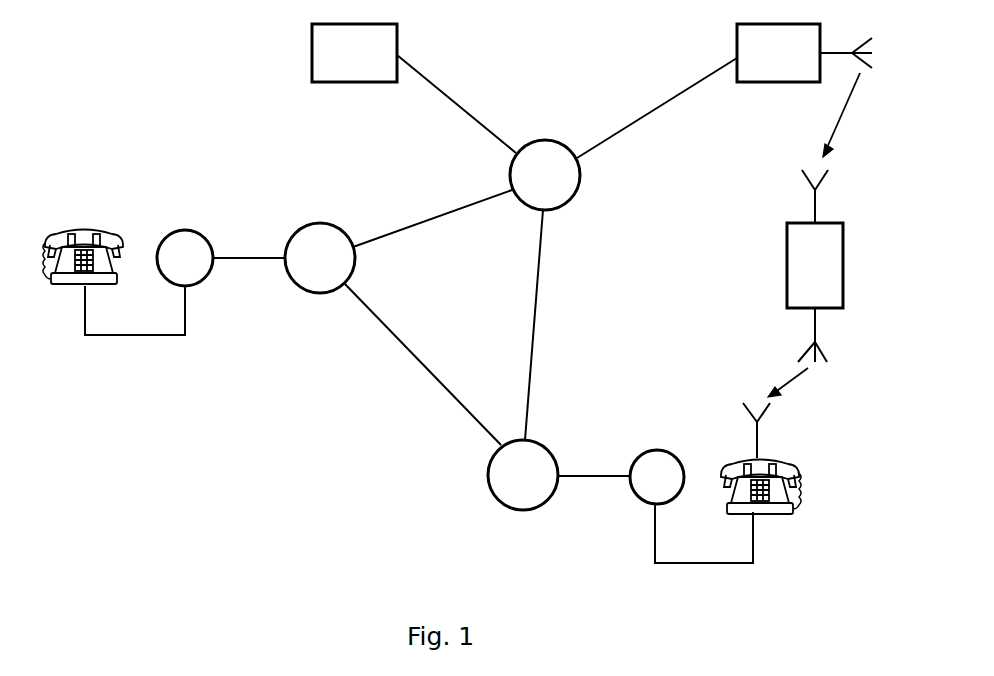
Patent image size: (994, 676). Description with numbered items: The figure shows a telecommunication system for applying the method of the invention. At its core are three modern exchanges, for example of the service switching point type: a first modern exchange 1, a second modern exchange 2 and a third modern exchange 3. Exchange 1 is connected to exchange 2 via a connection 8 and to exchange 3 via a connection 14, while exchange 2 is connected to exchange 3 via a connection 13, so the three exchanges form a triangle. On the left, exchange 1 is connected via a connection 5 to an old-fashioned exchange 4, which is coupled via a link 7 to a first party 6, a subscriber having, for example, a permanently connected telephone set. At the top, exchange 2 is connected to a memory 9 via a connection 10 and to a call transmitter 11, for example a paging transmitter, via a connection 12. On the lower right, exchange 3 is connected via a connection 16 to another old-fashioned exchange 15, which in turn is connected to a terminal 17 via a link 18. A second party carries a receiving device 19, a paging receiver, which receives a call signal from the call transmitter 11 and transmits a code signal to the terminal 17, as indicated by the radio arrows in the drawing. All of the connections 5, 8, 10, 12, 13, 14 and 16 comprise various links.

The first modern exchange 1 is at (320, 258).
The second modern exchange 2 is at (545, 175).
The third modern exchange 3 is at (523, 475).
The old-fashioned exchange 4 is at (185, 258).
The connection 5 is at (249, 242).
The first party 6 is at (83, 239).
The link 7 is at (135, 310).
The connection 8 is at (432, 215).
The memory 9 is at (354, 53).
The connection 10 is at (456, 104).
The call transmitter 11 is at (804, 53).
The connection 12 is at (657, 108).
The connection 13 is at (547, 325).
The connection 14 is at (422, 364).
The old-fashioned exchange 15 is at (657, 477).
The connection 16 is at (594, 461).
The terminal 17 is at (779, 458).
The link 18 is at (704, 533).
The receiving device 19 is at (815, 266).